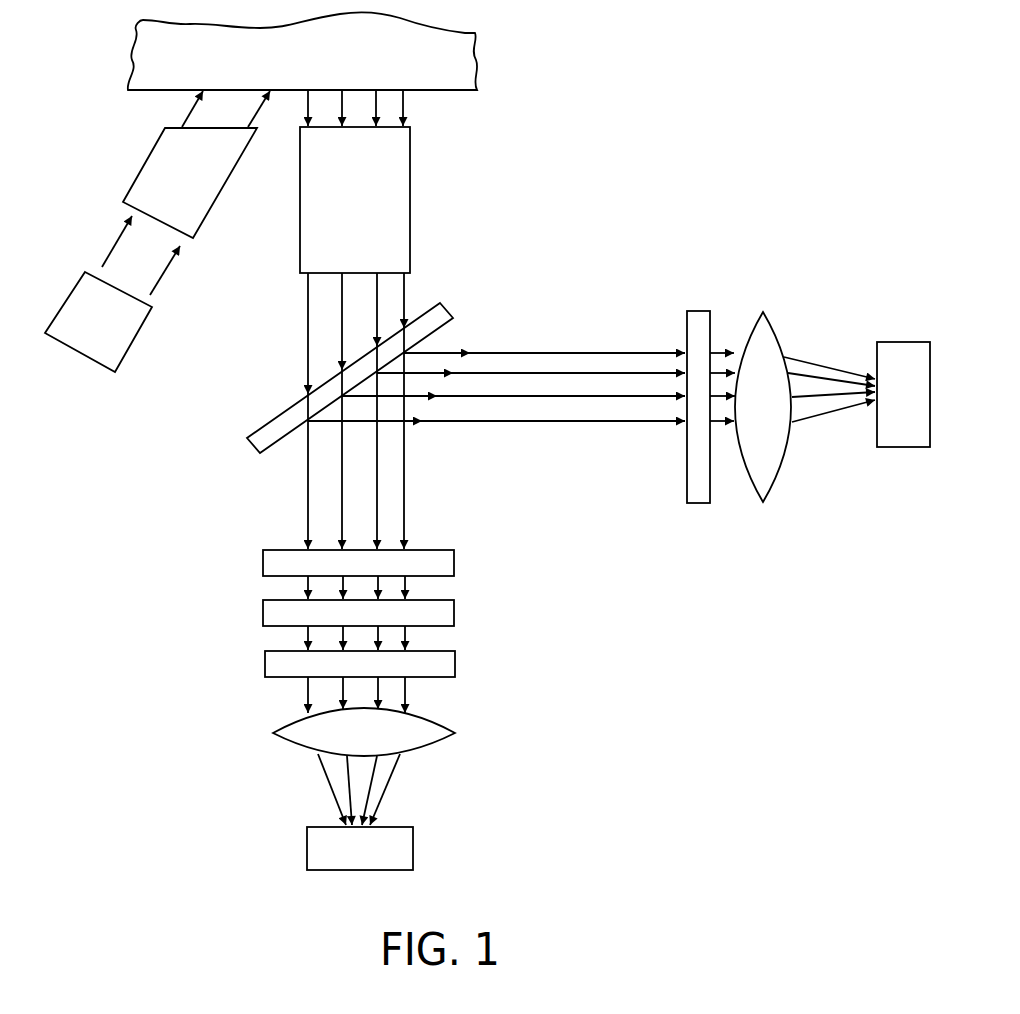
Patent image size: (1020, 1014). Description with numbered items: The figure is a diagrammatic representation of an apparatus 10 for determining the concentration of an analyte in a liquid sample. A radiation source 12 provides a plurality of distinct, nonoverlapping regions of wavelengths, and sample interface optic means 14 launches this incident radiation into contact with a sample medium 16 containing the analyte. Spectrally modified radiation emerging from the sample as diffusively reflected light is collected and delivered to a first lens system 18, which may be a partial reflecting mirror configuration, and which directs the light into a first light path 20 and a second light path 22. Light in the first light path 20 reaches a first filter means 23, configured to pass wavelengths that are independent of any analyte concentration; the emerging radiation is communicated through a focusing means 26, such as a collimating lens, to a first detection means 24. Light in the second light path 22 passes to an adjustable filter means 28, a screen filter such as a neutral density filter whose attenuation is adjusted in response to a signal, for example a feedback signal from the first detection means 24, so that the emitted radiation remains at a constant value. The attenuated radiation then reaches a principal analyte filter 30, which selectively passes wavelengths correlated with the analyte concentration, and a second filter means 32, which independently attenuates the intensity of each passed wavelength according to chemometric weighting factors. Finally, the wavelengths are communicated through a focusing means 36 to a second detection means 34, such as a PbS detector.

The apparatus 10 is at (157, 492).
The radiation source 12 is at (120, 338).
The sample interface optic means 14 is at (315, 213).
The sample medium 16 is at (310, 70).
The first lens system 18 is at (430, 311).
The first light path 20 is at (568, 393).
The second light path 22 is at (370, 490).
The first filter means 23 is at (702, 497).
The first detection means 24 is at (895, 435).
The focusing means 26 is at (770, 470).
The adjustable filter means 28 is at (443, 563).
The principal analyte filter 30 is at (447, 615).
The second filter means 32 is at (445, 665).
The second detection means 34 is at (402, 850).
The focusing means 36 is at (438, 733).